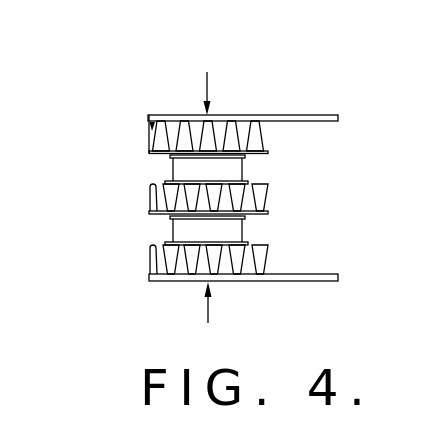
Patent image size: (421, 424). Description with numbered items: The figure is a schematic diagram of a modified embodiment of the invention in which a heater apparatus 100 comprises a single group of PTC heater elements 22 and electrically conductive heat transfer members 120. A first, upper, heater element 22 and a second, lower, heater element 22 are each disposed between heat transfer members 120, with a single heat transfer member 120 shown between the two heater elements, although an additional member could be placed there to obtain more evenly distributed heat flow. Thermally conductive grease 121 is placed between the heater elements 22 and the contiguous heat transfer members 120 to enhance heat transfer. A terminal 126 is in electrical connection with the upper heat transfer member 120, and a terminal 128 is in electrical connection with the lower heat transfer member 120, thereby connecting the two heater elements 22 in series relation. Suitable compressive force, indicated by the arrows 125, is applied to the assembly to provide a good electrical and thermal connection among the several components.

The heater apparatus 100 is at (166, 97).
The heat transfer member 120 is at (157, 138).
The thermally conductive grease 121 is at (245, 155).
The PTC heater element 22 is at (187, 230).
The arrows 125 is at (207, 82).
The terminal 126 is at (293, 115).
The terminal 128 is at (288, 282).